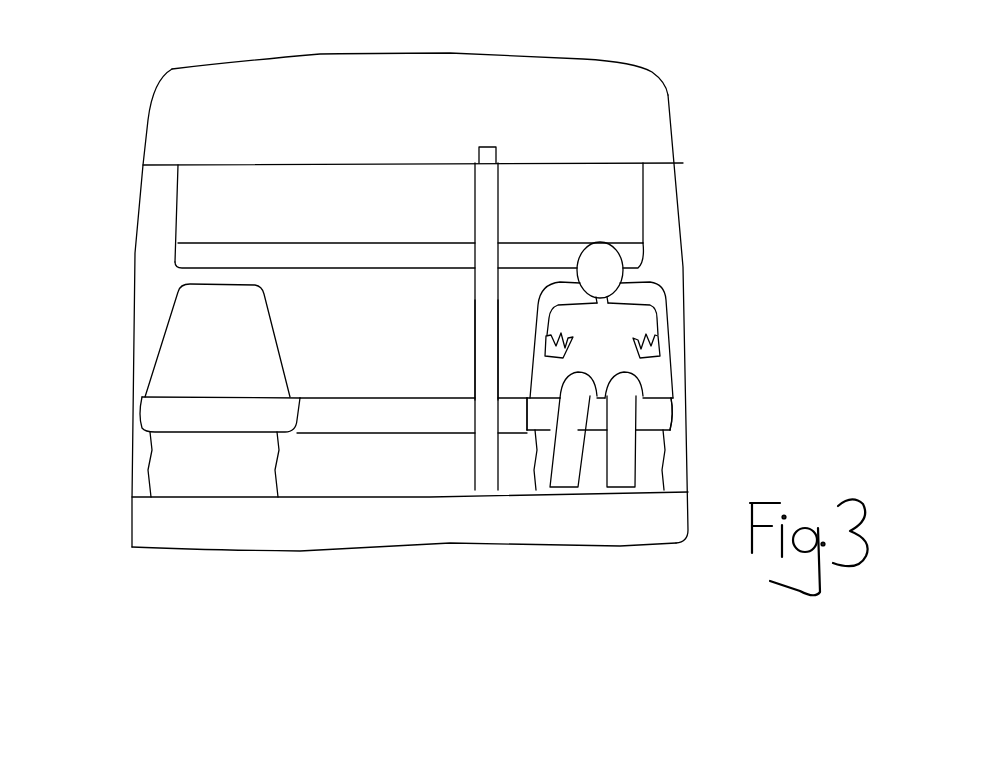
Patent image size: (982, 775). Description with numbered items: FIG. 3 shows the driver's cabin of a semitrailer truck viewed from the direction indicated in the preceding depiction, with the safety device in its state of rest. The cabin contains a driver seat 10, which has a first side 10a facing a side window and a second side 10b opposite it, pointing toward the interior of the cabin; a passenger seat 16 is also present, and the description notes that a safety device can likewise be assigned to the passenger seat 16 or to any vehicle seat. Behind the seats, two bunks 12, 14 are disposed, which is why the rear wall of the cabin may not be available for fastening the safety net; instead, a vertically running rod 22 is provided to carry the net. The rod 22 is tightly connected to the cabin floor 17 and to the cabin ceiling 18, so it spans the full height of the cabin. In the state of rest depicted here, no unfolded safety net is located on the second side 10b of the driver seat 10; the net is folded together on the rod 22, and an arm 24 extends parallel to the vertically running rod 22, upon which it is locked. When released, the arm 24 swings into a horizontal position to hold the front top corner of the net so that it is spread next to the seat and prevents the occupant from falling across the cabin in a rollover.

The driver seat 10 is at (665, 410).
The first side 10a is at (682, 422).
The second side 10b is at (527, 404).
The bunk 12 is at (385, 422).
The bunk 14 is at (320, 253).
The passenger seat 16 is at (227, 418).
The cabin floor 17 is at (433, 497).
The cabin ceiling 18 is at (590, 156).
The vertically running rod 22 is at (490, 210).
The arm 24 is at (487, 337).